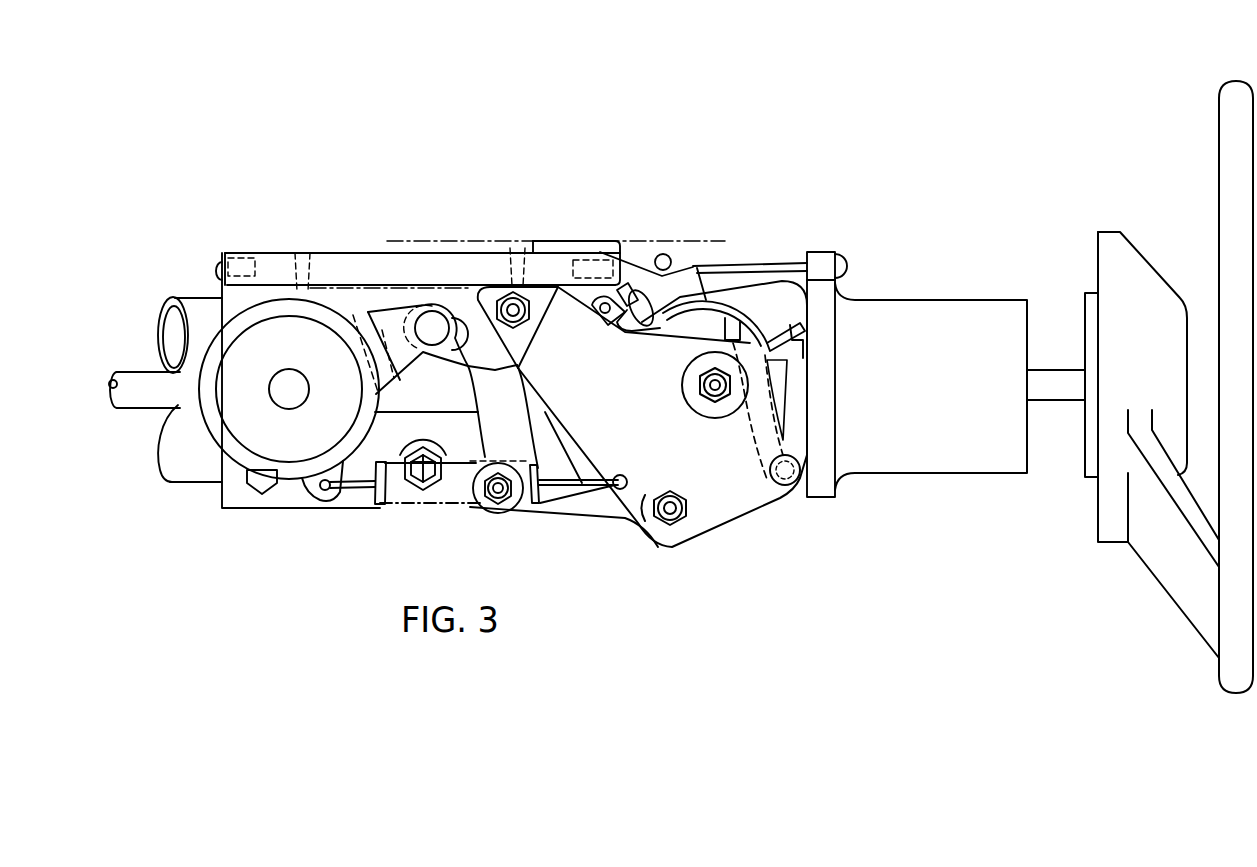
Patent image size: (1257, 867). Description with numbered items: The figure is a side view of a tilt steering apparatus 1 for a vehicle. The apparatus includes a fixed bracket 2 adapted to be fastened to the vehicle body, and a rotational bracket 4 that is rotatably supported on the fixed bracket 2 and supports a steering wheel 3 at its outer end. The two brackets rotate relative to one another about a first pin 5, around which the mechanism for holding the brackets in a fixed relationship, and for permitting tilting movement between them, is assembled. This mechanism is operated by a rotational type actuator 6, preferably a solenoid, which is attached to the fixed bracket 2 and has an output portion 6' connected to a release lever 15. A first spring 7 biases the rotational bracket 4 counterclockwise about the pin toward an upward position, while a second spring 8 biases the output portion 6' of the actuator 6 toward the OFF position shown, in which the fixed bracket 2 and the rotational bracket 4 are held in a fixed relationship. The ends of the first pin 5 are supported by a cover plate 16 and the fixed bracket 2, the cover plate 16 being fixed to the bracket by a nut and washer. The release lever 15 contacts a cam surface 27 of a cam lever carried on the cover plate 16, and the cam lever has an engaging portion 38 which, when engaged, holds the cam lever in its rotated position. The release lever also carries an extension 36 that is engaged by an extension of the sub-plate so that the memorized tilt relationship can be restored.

The tilt steering apparatus 1 is at (748, 212).
The fixed bracket 2 is at (600, 245).
The steering wheel 3 is at (1219, 156).
The rotational bracket 4 is at (910, 300).
The first pin 5 is at (708, 385).
The rotational type actuator 6 is at (292, 435).
The output portion 6' is at (289, 328).
The first spring 7 is at (517, 253).
The second spring 8 is at (383, 510).
The release lever 15 is at (455, 316).
The cover plate 16 is at (708, 518).
The cam surface 27 is at (766, 420).
The extension 36 is at (638, 296).
The engaging portion 38 is at (743, 311).